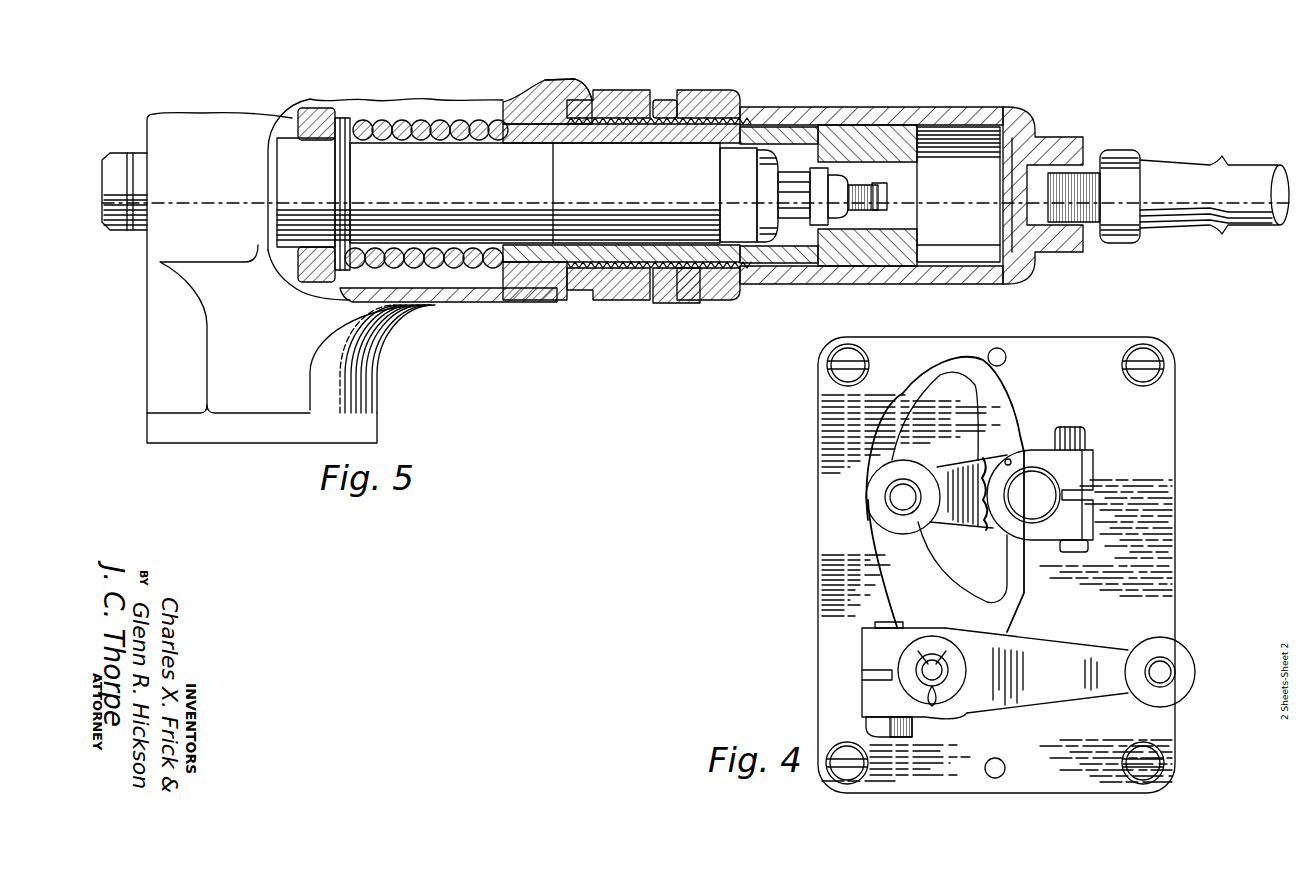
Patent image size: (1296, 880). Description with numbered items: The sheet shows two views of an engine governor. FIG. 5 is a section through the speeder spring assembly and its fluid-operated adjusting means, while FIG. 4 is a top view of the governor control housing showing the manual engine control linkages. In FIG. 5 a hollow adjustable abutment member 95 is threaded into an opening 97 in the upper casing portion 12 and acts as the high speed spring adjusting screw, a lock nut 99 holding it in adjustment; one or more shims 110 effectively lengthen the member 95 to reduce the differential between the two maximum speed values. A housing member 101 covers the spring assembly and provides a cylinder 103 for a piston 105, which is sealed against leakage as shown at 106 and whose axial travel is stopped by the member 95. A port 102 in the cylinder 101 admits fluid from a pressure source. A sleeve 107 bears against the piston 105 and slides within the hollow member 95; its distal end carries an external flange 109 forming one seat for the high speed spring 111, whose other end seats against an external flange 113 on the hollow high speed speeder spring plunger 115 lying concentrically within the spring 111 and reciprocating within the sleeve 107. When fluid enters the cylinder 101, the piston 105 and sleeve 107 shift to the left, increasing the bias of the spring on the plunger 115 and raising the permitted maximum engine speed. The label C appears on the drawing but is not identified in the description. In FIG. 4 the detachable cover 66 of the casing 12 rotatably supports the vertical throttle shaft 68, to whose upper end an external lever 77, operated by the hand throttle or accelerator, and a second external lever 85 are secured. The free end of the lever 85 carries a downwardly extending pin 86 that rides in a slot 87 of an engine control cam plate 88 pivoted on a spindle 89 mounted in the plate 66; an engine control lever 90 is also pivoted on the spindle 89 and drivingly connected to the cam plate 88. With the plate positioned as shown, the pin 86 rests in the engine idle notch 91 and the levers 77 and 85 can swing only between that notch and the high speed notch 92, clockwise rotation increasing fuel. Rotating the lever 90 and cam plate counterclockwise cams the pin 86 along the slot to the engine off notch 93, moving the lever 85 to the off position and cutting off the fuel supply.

In FIG. 5, the casing 12 is at (162, 296).
In FIG. 5, the external flange 113 is at (349, 118).
In FIG. 5, the high speed spring 111 is at (406, 122).
In FIG. 5, the external flange 109 is at (545, 102).
In FIG. 5, the shims 110 is at (560, 79).
In FIG. 5, the opening 97 is at (615, 99).
In FIG. 5, the lock nut 99 is at (660, 100).
In FIG. 5, the hollow adjustable abutment member 95 is at (695, 105).
In FIG. 5, the seal 106 is at (832, 125).
In FIG. 5, the piston 105 is at (885, 125).
In FIG. 5, the housing member 101 is at (1030, 118).
In FIG. 5, the port 102 is at (1078, 172).
In FIG. 5, the cylinder 103 is at (940, 262).
In FIG. 5, the sleeve 107 is at (527, 141).
In FIG. 5, the high speed speeder spring plunger 115 is at (538, 217).
In FIG. 5, the chamber C is at (482, 266).
In FIG. 4, the detachable cover 66 is at (1162, 412).
In FIG. 4, the engine high speed position notch 92 is at (960, 373).
In FIG. 4, the external lever 77 is at (1010, 463).
In FIG. 4, the pin 86 is at (900, 496).
In FIG. 4, the throttle shaft 68 is at (1038, 500).
In FIG. 4, the notch 91 is at (912, 514).
In FIG. 4, the second external lever 85 is at (946, 518).
In FIG. 4, the slot 87 is at (935, 578).
In FIG. 4, the engine off notch 93 is at (1026, 592).
In FIG. 4, the engine control cam plate 88 is at (917, 593).
In FIG. 4, the spindle 89 is at (917, 662).
In FIG. 4, the engine control lever 90 is at (1070, 652).